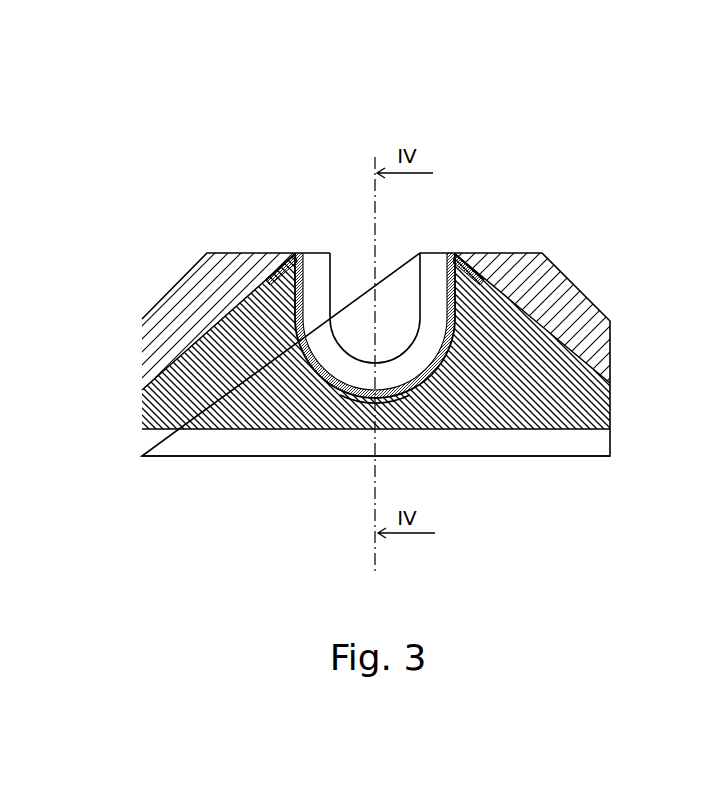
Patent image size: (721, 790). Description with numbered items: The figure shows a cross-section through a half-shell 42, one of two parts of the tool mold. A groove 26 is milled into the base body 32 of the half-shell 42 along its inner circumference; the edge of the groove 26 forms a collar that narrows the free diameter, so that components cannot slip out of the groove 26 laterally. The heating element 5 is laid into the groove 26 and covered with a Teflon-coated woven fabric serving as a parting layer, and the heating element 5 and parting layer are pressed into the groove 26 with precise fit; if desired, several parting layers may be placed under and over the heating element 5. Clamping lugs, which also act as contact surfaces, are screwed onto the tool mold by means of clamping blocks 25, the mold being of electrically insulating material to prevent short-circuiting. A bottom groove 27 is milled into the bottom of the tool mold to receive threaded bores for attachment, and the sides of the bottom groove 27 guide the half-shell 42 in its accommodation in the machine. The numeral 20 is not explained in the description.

The half-shell 42 is at (212, 212).
The groove 20 is at (345, 246).
The heating element 5 is at (455, 256).
The clamping block 25 is at (578, 287).
The base body 32 is at (604, 410).
The groove 26 is at (345, 394).
The bottom groove 27 is at (561, 433).